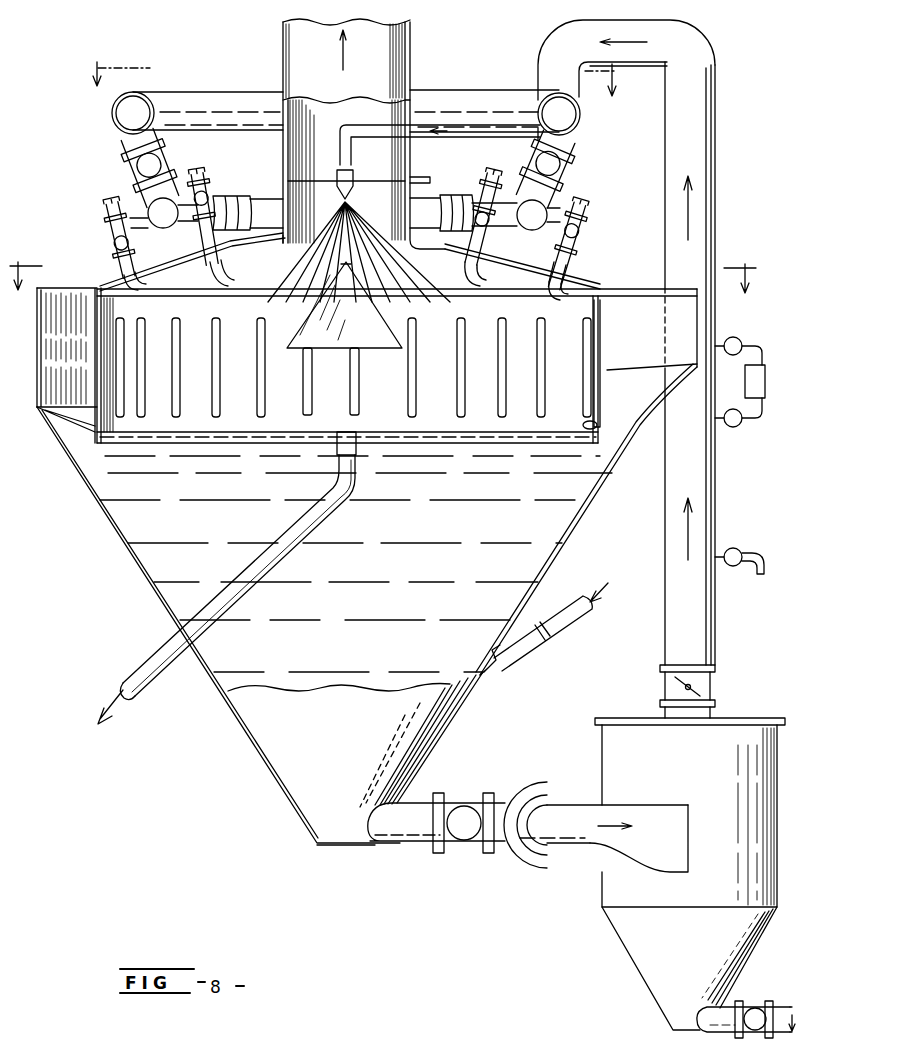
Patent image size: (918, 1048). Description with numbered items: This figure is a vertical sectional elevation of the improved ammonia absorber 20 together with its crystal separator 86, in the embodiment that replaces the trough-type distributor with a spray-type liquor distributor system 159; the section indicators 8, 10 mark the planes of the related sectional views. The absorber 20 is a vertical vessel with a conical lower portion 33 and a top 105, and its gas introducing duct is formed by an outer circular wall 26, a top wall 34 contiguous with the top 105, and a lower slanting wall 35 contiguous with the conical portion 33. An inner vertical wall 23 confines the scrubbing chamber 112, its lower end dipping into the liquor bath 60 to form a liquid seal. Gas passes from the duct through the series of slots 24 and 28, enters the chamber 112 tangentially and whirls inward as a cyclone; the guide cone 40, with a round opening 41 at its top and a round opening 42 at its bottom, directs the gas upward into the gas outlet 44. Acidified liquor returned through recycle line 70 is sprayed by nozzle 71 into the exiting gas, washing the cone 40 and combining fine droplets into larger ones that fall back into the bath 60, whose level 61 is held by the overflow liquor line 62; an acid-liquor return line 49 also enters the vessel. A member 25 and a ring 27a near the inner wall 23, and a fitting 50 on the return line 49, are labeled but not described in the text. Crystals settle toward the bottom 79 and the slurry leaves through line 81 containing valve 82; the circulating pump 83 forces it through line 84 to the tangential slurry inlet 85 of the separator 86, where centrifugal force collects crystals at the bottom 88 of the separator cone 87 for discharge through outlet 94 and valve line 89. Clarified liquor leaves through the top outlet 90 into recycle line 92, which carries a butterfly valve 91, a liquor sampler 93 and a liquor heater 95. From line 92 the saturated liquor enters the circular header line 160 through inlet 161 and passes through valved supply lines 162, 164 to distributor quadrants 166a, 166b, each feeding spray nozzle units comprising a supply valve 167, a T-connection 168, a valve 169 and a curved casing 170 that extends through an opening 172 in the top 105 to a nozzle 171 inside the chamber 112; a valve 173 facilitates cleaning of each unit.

The section line 8- 8 is at (383, 267).
The section line 10- 10 is at (357, 71).
The ammonia absorber 20 is at (119, 548).
The inner vertical wall 23 is at (599, 308).
The slots 24 is at (600, 406).
The slot 25 is at (603, 340).
The outer circular wall 26 is at (40, 336).
The ring seal 27a is at (600, 426).
The slots 28 is at (463, 348).
The conical lower portion 33 is at (162, 598).
The top wall 34 is at (630, 297).
The lower slanting wall 35 is at (633, 424).
The guide cone 40 is at (364, 294).
The round opening 41 is at (348, 262).
The round opening 42 is at (368, 352).
The gas outlet 44 is at (283, 37).
The acid-liquor return line 49 is at (565, 634).
The nozzle 50 is at (496, 648).
The liquor bath 60 is at (356, 573).
The surface of the liquor bath 61 is at (373, 432).
The overflow liquor line 62 is at (152, 690).
The recycle line 70 is at (364, 125).
The spray nozzle 71 is at (352, 180).
The bottom of the absorber 79 is at (330, 845).
The crystal slurry outlet line 81 is at (425, 802).
The valve 82 is at (473, 853).
The circulating pump 83 is at (541, 867).
The line 84 is at (596, 805).
The slurry inlet 85 is at (672, 873).
The crystal separator 86 is at (600, 898).
The separator cone 87 is at (640, 972).
The bottom of the separator 88 is at (688, 1030).
The valve line 89 is at (794, 1012).
The top outlet 90 is at (718, 720).
The butterfly valve 91 is at (662, 694).
The recycle line 92 is at (713, 478).
The liquor sampler 93 is at (748, 556).
The outlet 94 is at (726, 1006).
The liquor heater 95 is at (766, 383).
The top 105 is at (178, 270).
The scrubbing chamber 112 is at (178, 365).
The liquor distributor system 159 is at (231, 70).
The circular header line 160 is at (170, 92).
The inlet 161 is at (540, 88).
The valved supply line 162 is at (572, 150).
The valved supply line 164 is at (120, 145).
The distributor quadrant 166a is at (478, 222).
The distributor quadrant 166b is at (266, 168).
The supply valve 167 is at (552, 232).
The T-connection 168 is at (586, 226).
The valve 169 is at (578, 247).
The curved casing 170 is at (566, 266).
The nozzle 171 is at (483, 284).
The opening 172 is at (572, 297).
The valve 173 is at (586, 202).